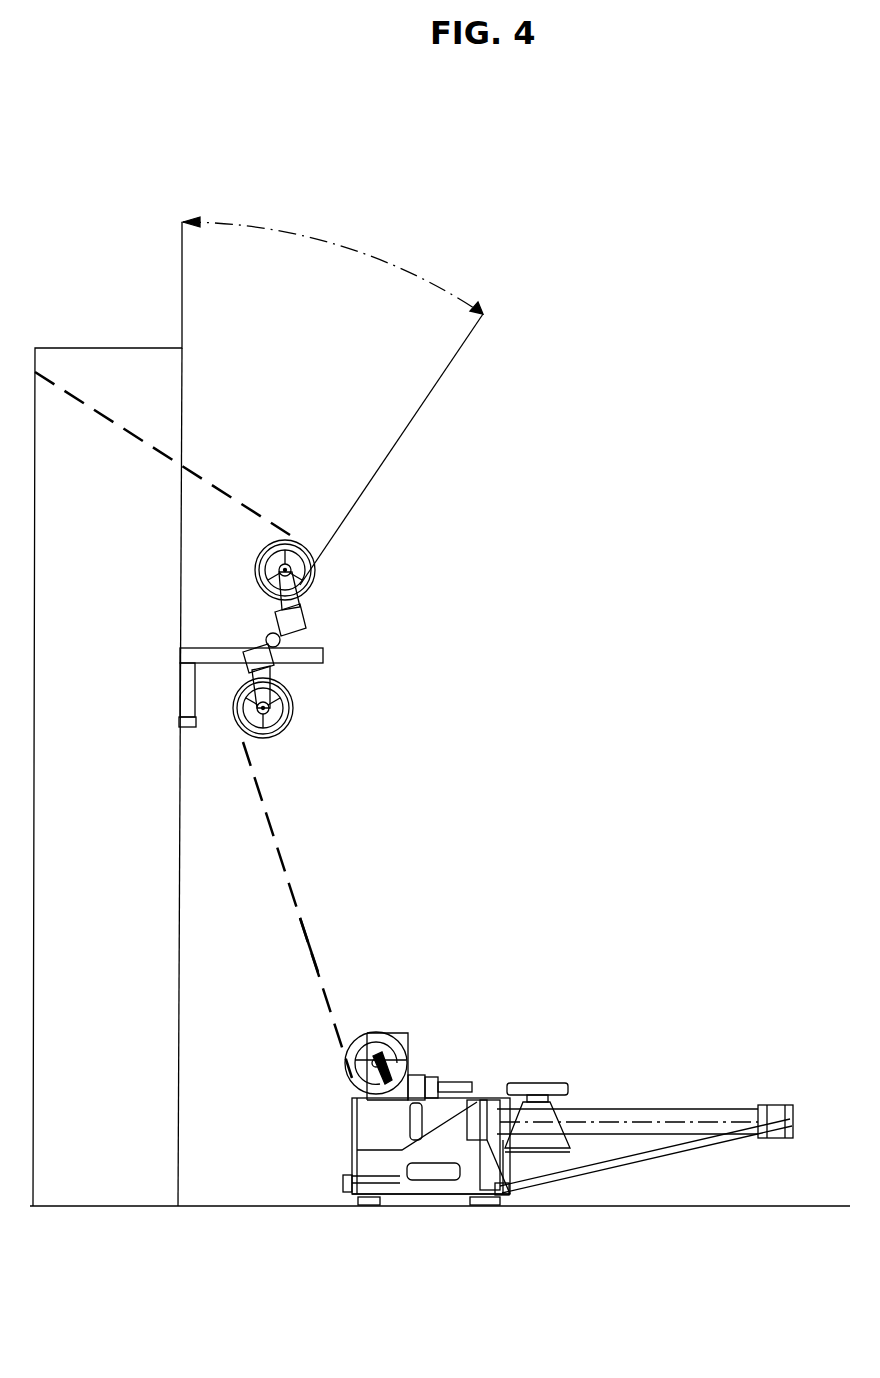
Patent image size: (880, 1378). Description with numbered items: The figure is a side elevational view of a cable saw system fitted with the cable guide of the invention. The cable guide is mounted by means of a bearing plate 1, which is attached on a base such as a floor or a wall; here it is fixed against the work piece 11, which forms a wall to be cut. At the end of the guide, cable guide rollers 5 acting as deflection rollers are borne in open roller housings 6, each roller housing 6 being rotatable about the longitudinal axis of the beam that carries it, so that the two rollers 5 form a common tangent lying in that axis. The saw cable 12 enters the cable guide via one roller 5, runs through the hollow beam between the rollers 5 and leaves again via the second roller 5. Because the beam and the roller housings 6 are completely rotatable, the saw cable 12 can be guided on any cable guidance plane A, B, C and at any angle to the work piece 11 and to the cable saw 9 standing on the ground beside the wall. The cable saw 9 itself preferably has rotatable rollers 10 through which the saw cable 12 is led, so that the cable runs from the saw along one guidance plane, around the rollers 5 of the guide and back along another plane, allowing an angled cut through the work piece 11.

The bearing plate 1 is at (272, 559).
The cable guide roller 5 is at (347, 550).
The roller housing 6 is at (265, 698).
The cable saw 9 is at (618, 1076).
The rotatable roller 10 is at (432, 1002).
The work piece 11 is at (199, 714).
The saw cable 12 is at (392, 902).
The cable guidance plane A is at (283, 866).
The cable guidance plane B is at (162, 395).
The cable guidance plane C is at (303, 602).